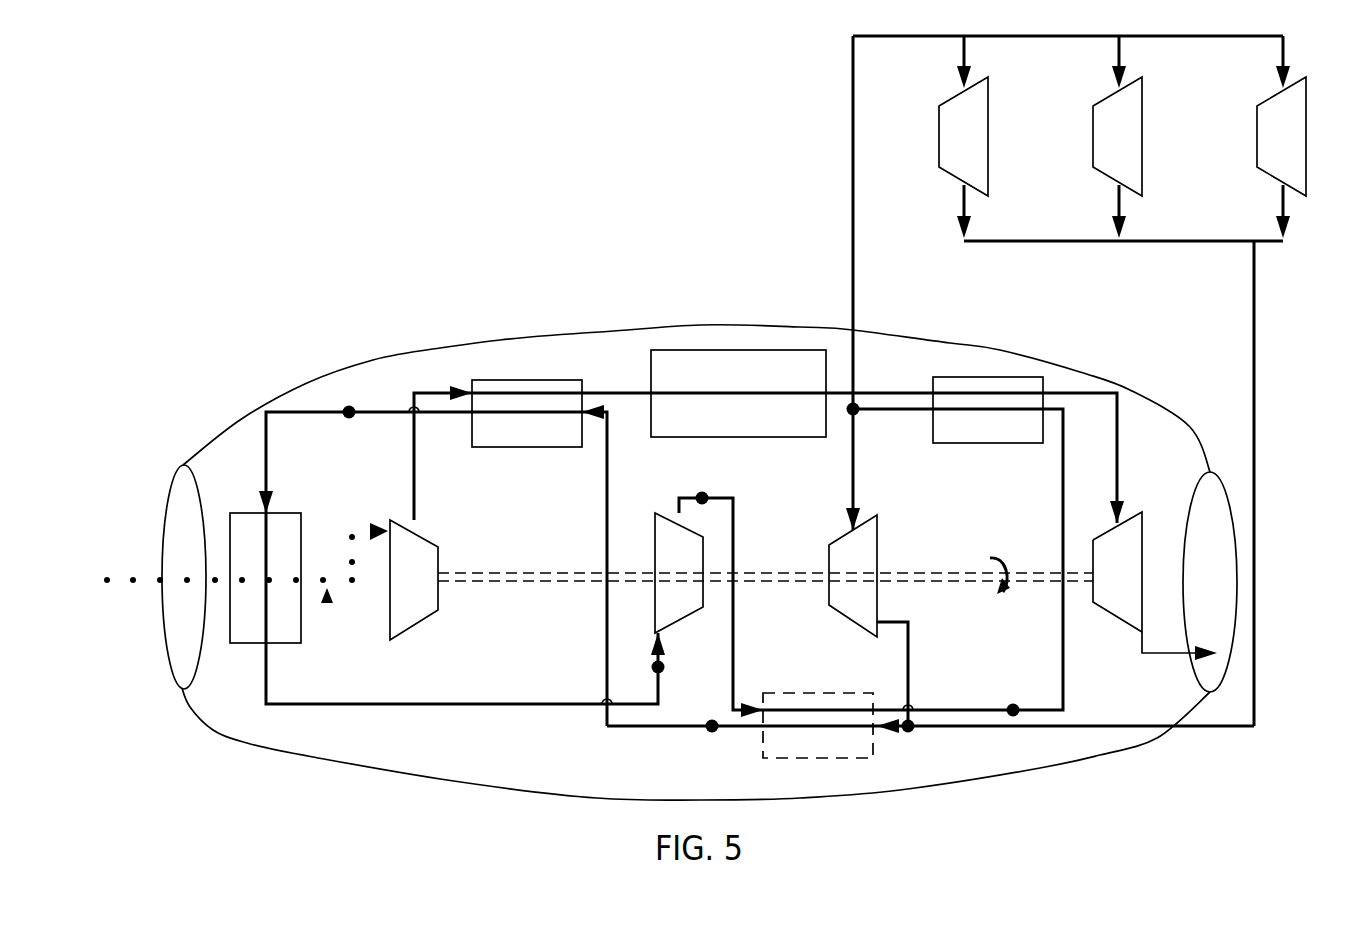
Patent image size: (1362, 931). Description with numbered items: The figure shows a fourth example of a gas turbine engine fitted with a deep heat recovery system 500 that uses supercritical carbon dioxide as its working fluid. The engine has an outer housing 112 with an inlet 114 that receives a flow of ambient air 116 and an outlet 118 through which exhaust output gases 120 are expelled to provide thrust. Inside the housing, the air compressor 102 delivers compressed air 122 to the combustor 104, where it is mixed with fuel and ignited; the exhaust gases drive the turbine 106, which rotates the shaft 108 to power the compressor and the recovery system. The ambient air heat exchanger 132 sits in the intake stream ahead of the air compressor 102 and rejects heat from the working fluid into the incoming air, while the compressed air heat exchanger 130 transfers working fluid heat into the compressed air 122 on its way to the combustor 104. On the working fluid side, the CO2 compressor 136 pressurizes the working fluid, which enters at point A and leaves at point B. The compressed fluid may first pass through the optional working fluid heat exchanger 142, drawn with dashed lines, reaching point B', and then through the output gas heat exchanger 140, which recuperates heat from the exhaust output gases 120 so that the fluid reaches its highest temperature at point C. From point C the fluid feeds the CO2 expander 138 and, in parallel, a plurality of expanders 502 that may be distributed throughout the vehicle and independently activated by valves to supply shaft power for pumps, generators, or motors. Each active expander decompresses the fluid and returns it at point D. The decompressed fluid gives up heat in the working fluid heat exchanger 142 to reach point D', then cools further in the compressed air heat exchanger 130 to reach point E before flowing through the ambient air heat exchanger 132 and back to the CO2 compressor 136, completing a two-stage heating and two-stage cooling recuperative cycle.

The deep heat recovery system 500 is at (262, 112).
The expanders 502 is at (949, 93).
The air compressor 102 is at (413, 628).
The combustor 104 is at (738, 350).
The turbine 106 is at (1142, 512).
The shaft 108 is at (548, 582).
The outer housing 112 is at (477, 797).
The inlet 114 is at (178, 521).
The ambient air 116 is at (330, 604).
The outlet 118 is at (1227, 581).
The exhaust output gases 120 is at (1090, 395).
The compressed air 122 is at (436, 392).
The compressed air heat exchanger 130 is at (527, 380).
The ambient air heat exchanger 132 is at (247, 645).
The CO2 compressor 136 is at (655, 605).
The CO2 expander 138 is at (838, 535).
The output gas heat exchanger 140 is at (988, 377).
The working fluid heat exchanger 142 is at (820, 693).
The point A is at (668, 668).
The point B is at (845, 563).
The point B' is at (1030, 690).
The point C is at (858, 415).
The point D is at (930, 694).
The point D' is at (701, 750).
The point E is at (349, 403).